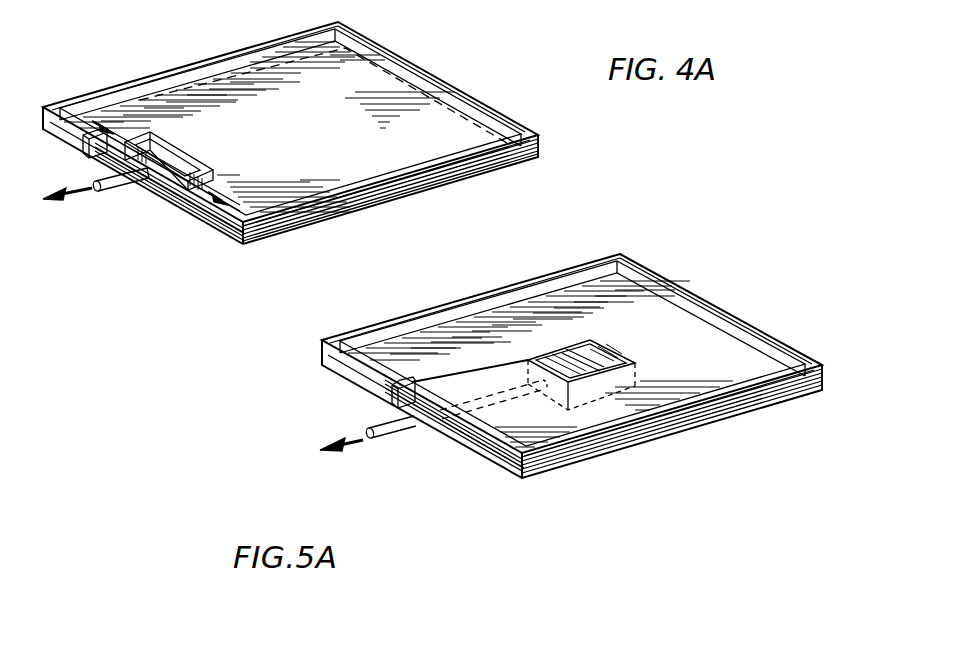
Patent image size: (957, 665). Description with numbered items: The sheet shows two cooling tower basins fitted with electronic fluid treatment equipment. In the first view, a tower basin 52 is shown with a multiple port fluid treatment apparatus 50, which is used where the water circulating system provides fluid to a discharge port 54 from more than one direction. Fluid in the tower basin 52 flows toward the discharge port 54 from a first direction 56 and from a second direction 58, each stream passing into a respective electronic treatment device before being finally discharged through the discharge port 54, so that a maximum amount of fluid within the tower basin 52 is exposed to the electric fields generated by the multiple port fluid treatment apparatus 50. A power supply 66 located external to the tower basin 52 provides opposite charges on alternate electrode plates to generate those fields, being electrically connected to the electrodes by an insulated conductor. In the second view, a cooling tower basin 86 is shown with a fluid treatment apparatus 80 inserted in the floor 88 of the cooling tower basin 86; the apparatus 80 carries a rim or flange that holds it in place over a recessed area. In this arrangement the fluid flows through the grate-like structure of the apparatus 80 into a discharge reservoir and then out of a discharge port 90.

In FIG. 4A, the multiple port fluid treatment apparatus 50 is at (203, 144).
In FIG. 4A, the tower basin 52 is at (418, 187).
In FIG. 4A, the discharge port 54 is at (103, 210).
In FIG. 4A, the direction 56 is at (88, 127).
In FIG. 4A, the direction 58 is at (233, 205).
In FIG. 4A, the power supply 66 is at (85, 150).
In FIG. 5A, the fluid treatment apparatus 80 is at (645, 370).
In FIG. 5A, the cooling tower basin 86 is at (642, 438).
In FIG. 5A, the floor 88 is at (500, 342).
In FIG. 5A, the discharge port 90 is at (393, 432).